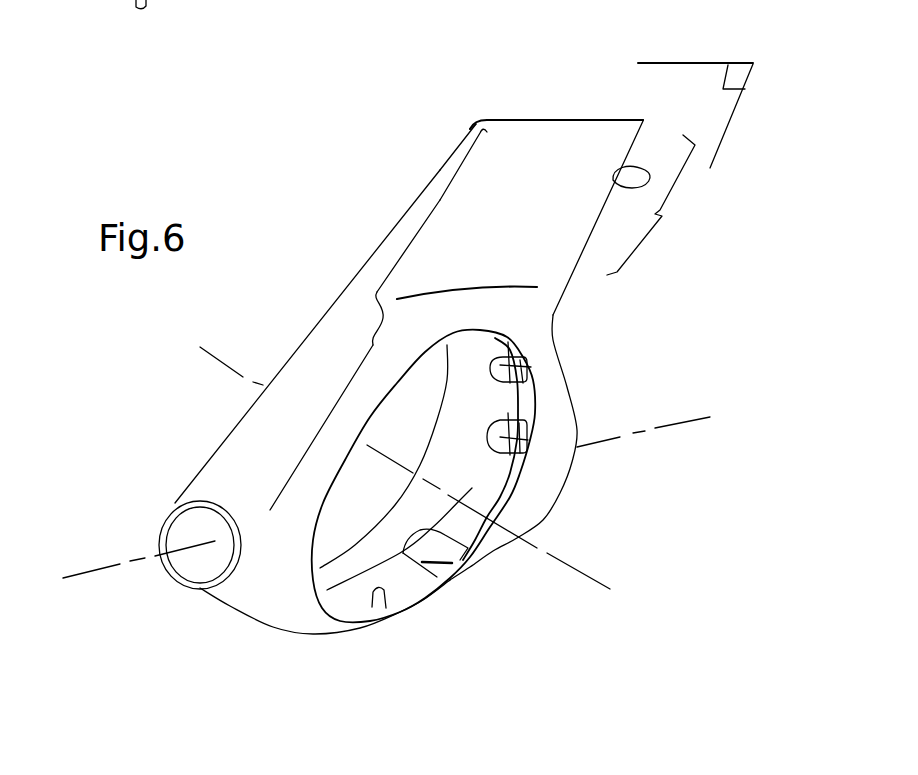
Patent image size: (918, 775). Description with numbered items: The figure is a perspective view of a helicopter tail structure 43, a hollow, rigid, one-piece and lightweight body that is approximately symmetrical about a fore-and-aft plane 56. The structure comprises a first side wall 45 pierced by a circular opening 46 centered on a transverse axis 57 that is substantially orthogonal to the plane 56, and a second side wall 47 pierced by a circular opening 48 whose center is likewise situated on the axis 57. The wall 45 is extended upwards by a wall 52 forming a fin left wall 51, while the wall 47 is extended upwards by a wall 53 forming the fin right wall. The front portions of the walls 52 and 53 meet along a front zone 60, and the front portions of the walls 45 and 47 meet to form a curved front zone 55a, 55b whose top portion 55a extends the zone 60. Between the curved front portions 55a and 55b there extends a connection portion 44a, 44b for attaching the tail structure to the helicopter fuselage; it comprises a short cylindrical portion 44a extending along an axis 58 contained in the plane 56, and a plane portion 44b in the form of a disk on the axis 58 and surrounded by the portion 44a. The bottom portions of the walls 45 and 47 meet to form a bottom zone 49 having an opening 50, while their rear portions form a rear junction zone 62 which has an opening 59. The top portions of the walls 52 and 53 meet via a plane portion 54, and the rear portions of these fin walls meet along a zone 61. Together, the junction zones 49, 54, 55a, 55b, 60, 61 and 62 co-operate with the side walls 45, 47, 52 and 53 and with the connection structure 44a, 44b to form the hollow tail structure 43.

The helicopter tail structure 43 is at (188, 418).
The short cylindrical portion 44a is at (174, 506).
The plane portion 44b is at (163, 533).
The first side wall 45 is at (518, 505).
The circular opening 46 is at (386, 608).
The second side wall 47 is at (456, 392).
The circular opening 48 is at (419, 447).
The bottom zone 49 is at (414, 578).
The opening 50 is at (461, 565).
The fin left wall 51 is at (660, 212).
The wall 52 is at (452, 211).
The wall 53 is at (441, 164).
The plane portion 54 is at (526, 116).
The top portion of front zone 55a is at (223, 471).
The front zone 55b is at (214, 593).
The fore-and-aft plane 56 is at (723, 84).
The transverse axis 57 is at (580, 570).
The axis 58 is at (97, 572).
The opening 59 is at (537, 411).
The front zone 60 is at (393, 243).
The zone 61 is at (614, 177).
The rear junction zone 62 is at (576, 473).